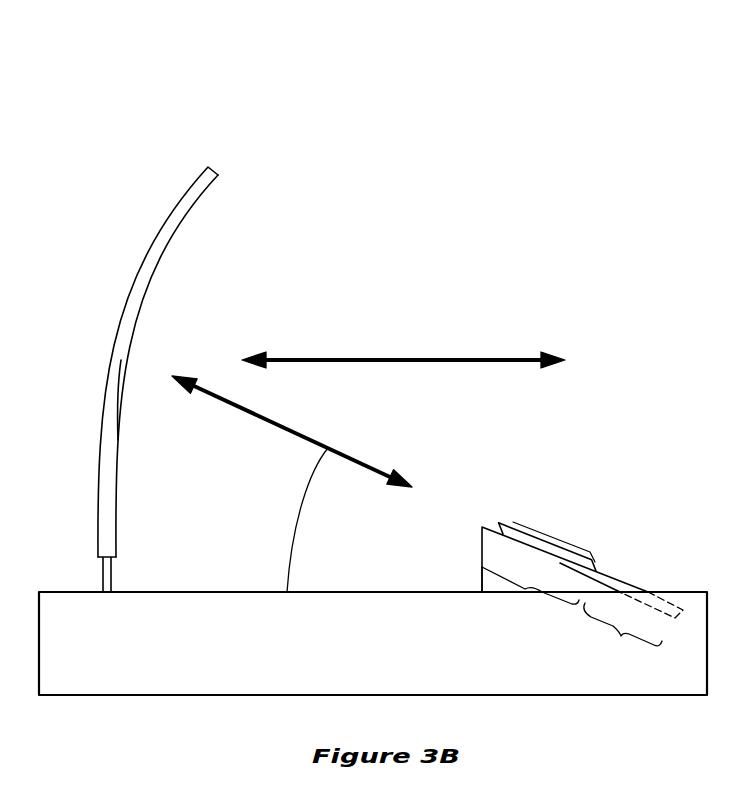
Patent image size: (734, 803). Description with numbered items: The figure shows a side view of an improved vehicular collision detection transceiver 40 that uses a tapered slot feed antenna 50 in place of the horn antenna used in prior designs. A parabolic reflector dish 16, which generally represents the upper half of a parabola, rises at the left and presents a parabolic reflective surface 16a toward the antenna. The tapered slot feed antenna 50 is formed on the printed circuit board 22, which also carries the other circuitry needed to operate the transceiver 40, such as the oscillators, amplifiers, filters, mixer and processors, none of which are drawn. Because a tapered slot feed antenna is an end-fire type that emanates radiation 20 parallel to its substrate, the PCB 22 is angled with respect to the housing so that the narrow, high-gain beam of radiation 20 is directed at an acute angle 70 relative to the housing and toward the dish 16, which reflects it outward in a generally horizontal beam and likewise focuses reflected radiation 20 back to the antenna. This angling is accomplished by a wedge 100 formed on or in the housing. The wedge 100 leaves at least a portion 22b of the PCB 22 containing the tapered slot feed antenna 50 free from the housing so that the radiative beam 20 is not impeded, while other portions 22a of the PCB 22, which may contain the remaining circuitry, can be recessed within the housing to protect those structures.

The parabolic reflector dish 16 is at (152, 267).
The parabolic reflective surface 16a is at (135, 429).
The vehicular collision detection transceiver 40 is at (38, 47).
The radiation 20 is at (382, 382).
The acute angle 70 is at (308, 520).
The printed circuit board 22 is at (593, 568).
The other portions of the PCB 22a is at (621, 635).
The portion of the PCB 22b is at (505, 596).
The wedge 100 is at (507, 550).
The tapered slot feed antenna 50 is at (580, 514).